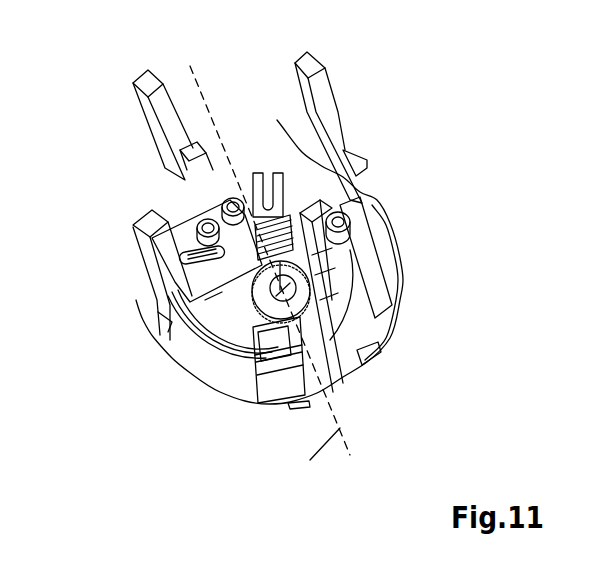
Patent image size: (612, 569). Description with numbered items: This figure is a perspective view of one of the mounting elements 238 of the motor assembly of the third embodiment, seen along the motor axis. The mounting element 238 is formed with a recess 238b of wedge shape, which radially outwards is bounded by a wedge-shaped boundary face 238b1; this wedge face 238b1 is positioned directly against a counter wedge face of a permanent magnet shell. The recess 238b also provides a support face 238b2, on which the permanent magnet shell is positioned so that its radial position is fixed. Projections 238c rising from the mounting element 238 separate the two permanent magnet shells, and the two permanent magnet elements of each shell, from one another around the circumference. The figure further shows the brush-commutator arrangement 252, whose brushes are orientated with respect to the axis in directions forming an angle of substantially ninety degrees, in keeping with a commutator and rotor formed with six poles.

The mounting element 238 is at (468, 108).
The recess 238b is at (365, 180).
The wedge-shaped boundary face 238b1 is at (372, 191).
The support face 238b2 is at (300, 294).
The projection 238c is at (306, 79).
The brush-commutator arrangement 252 is at (262, 203).